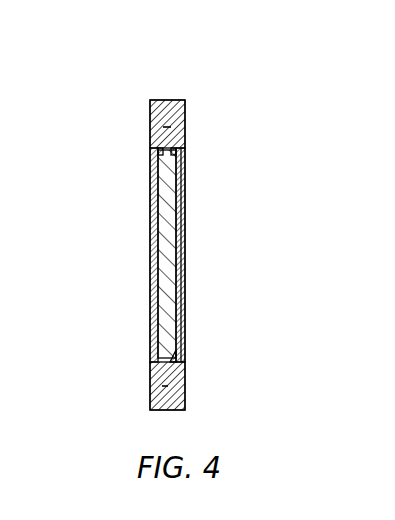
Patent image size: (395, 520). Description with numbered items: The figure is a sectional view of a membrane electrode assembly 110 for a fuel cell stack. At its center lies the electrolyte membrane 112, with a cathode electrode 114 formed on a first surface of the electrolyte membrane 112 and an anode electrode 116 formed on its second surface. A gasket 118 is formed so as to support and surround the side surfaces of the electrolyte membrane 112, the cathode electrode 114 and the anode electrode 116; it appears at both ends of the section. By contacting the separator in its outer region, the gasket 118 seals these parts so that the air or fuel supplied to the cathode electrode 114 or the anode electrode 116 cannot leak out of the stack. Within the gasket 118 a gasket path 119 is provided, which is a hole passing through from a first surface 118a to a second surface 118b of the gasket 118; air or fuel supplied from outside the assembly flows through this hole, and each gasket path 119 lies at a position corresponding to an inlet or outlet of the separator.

The membrane electrode assembly 110 is at (212, 74).
The electrolyte membrane 112 is at (158, 296).
The cathode electrode 114 is at (153, 213).
The anode electrode 116 is at (183, 245).
The gasket 118 is at (155, 109).
The first surface 118a is at (150, 147).
The second surface 118b is at (185, 147).
The gasket path 119 is at (171, 127).